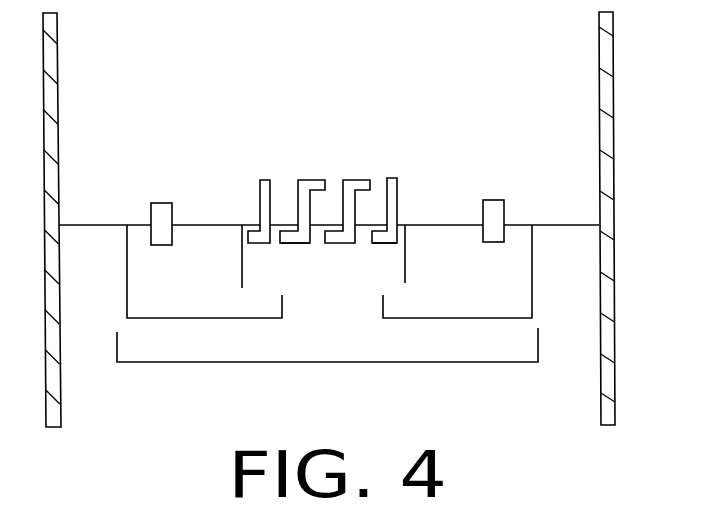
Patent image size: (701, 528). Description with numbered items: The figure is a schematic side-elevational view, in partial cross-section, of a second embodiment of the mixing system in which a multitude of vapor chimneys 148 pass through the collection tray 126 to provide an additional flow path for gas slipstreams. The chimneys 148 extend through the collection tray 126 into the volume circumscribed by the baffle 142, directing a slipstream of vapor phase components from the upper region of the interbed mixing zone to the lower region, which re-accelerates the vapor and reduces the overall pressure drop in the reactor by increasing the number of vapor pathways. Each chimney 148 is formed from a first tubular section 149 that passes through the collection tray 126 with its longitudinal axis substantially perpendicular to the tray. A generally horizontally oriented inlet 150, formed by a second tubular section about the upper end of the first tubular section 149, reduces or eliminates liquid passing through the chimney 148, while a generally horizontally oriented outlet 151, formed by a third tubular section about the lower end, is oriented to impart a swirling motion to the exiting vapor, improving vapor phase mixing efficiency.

The collection tray 126 is at (83, 225).
The baffle 142 is at (408, 255).
The chimneys 148 is at (392, 155).
The first tubular section 149 is at (281, 178).
The inlet 150 is at (258, 179).
The outlet 151 is at (387, 245).